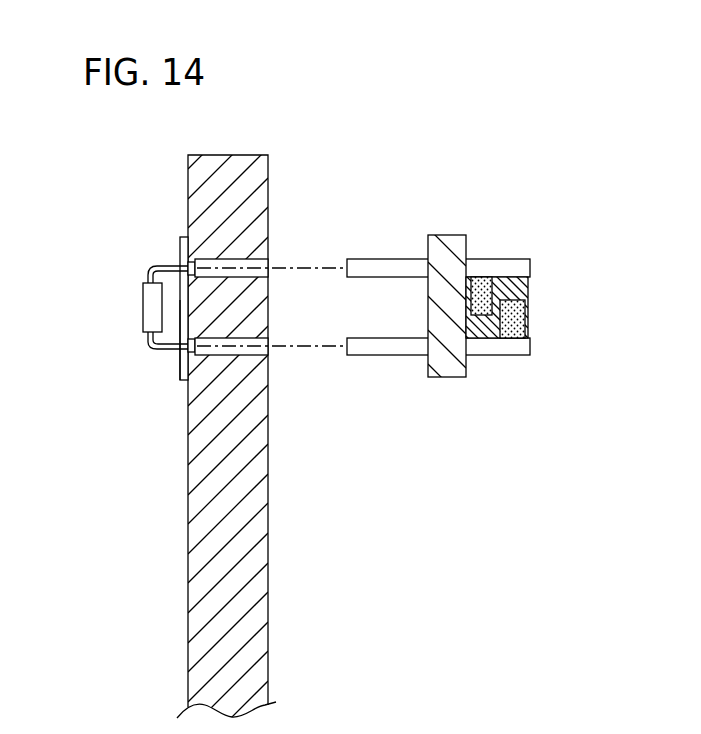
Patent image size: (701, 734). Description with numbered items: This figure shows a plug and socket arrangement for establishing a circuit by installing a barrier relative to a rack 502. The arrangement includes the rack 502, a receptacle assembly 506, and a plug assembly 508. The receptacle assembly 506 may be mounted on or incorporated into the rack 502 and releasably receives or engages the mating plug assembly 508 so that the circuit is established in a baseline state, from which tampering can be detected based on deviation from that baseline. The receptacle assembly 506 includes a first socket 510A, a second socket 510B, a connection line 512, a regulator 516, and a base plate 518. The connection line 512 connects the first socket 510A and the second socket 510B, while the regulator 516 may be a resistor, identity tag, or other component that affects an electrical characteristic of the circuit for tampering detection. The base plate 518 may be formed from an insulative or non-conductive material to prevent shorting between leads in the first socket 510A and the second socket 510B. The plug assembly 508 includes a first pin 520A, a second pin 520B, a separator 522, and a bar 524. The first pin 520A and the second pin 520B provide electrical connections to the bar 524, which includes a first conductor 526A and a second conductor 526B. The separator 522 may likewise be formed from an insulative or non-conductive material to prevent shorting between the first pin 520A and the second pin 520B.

The rack 502 is at (228, 168).
The receptacle assembly 506 is at (70, 186).
The plug assembly 508 is at (517, 203).
The first socket 510A is at (181, 248).
The second socket 510B is at (212, 356).
The connection line 512 is at (156, 270).
The regulator 516 is at (143, 303).
The base plate 518 is at (180, 364).
The first pin 520A is at (388, 260).
The second pin 520B is at (384, 355).
The separator 522 is at (438, 378).
The bar 524 is at (528, 300).
The first conductor 526A is at (494, 290).
The second conductor 526B is at (507, 320).